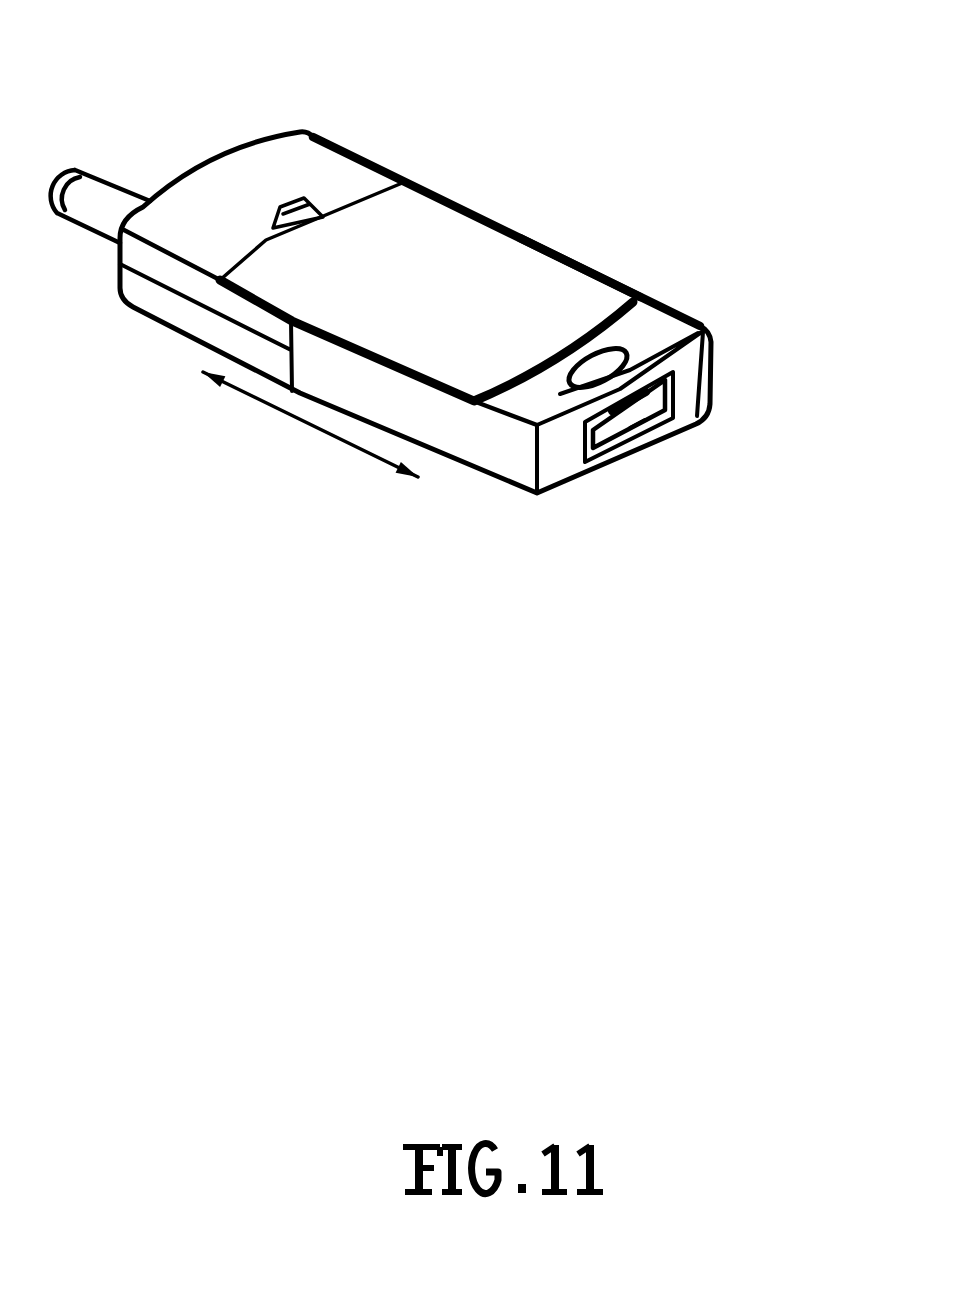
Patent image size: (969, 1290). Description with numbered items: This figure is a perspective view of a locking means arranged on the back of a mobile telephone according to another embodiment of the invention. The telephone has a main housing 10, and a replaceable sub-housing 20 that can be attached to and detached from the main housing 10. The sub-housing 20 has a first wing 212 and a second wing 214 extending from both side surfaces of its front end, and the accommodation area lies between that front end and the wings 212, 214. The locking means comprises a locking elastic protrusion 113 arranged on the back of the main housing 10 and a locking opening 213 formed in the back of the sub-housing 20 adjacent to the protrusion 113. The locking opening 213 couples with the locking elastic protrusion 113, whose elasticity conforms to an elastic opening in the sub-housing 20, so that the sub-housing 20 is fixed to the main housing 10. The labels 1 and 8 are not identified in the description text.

The sliding direction 1 is at (280, 412).
The top surface of upper body 8 is at (447, 228).
The main housing 10 is at (534, 215).
The sub-housing 20 is at (541, 500).
The locking elastic protrusion 113 is at (607, 363).
The first wing 212 is at (580, 267).
The locking opening 213 is at (703, 329).
The second wing 214 is at (362, 395).